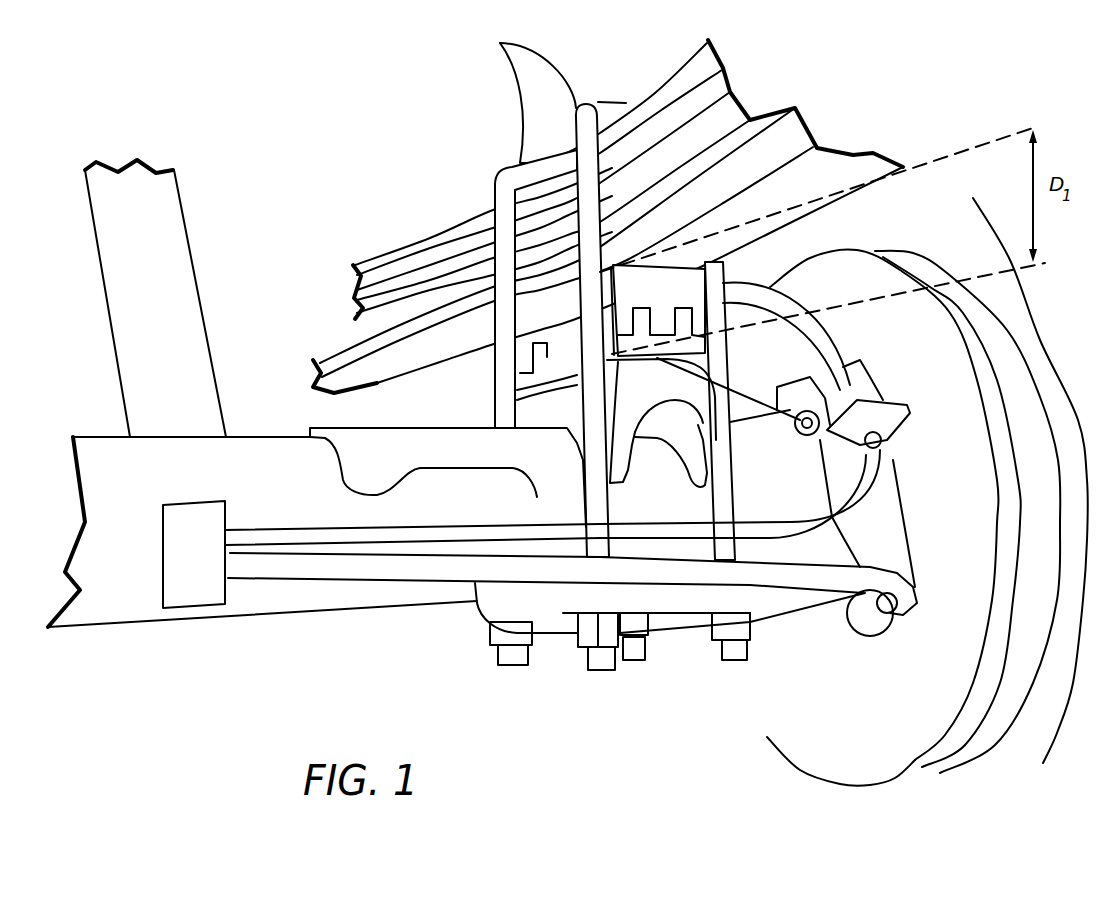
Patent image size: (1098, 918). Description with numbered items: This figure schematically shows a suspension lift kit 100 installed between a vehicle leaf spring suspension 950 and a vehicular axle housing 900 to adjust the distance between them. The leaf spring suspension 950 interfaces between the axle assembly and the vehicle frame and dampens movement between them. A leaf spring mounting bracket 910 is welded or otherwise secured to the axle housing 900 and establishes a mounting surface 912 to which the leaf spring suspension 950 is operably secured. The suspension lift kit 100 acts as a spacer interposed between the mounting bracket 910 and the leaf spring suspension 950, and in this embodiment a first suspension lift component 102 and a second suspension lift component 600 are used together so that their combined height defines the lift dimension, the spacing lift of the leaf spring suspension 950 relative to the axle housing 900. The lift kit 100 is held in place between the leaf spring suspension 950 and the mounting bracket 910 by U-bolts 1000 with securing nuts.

The suspension lift kit 100 is at (526, 330).
The first suspension lift component 102 is at (655, 280).
The second suspension lift component 600 is at (705, 347).
The axle housing 900 is at (237, 436).
The leaf spring mounting bracket 910 is at (650, 427).
The mounting surface 912 is at (887, 450).
The leaf spring suspension 950 is at (440, 257).
The U-bolts 1000 is at (511, 95).